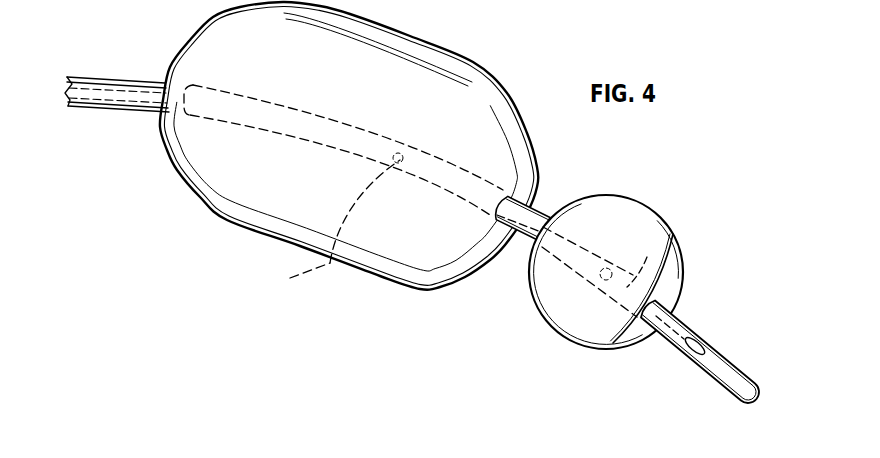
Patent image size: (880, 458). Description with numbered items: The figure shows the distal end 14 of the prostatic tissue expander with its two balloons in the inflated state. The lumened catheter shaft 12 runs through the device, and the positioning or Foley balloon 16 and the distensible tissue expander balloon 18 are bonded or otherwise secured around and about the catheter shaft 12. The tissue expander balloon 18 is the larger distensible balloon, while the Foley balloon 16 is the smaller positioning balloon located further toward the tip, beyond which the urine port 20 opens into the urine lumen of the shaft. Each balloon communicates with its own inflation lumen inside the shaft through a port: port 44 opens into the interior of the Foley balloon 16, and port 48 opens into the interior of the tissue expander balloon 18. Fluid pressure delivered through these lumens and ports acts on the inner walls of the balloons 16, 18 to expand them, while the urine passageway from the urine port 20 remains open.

The lumened catheter shaft 12 is at (122, 77).
The distal end 14 is at (423, 201).
The Foley balloon 16 is at (639, 250).
The distensible tissue expander balloon 18 is at (513, 88).
The urine port 20 is at (707, 337).
The port 44 is at (605, 292).
The port 48 is at (331, 222).